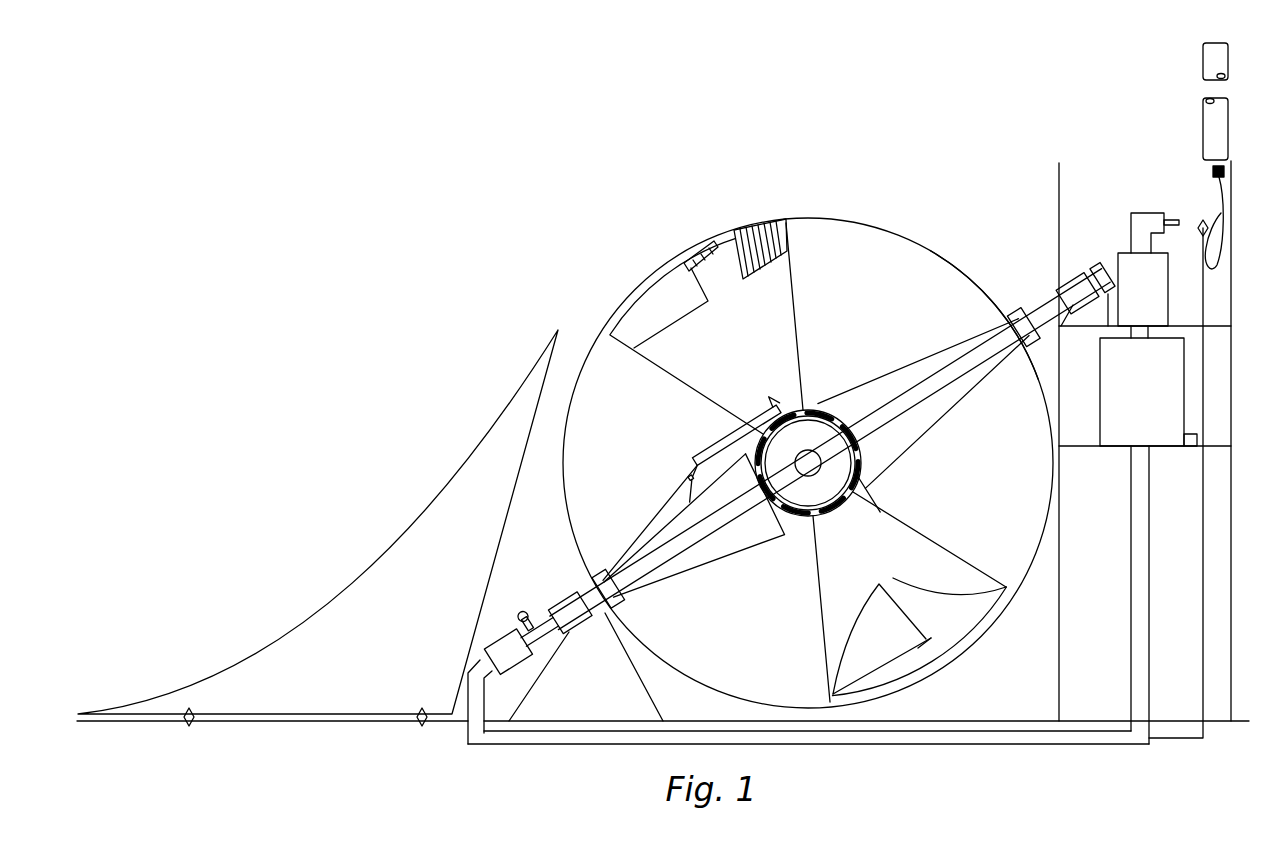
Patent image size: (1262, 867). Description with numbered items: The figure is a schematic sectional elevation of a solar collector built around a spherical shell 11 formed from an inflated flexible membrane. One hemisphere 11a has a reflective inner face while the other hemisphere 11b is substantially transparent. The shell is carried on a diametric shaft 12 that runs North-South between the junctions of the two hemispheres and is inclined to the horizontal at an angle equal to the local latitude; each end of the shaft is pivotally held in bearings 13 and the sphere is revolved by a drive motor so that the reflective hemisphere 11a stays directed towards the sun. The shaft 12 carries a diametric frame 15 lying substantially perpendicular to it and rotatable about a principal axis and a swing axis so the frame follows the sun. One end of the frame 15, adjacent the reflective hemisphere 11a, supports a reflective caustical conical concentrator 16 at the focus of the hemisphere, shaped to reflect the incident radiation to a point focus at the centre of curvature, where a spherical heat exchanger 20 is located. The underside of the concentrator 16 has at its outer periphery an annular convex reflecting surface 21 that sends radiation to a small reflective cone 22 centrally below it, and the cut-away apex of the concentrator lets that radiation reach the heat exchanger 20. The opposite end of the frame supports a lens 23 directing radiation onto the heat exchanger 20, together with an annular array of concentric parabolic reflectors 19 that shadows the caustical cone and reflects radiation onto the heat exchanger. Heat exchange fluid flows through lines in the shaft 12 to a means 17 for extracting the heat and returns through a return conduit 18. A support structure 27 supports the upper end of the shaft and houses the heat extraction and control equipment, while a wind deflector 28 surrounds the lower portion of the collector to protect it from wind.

The spherical shell 11 is at (877, 219).
The reflective hemisphere 11a is at (1004, 623).
The transparent hemisphere 11b is at (957, 257).
The diametric shaft 12 is at (816, 457).
The bearings 13 is at (823, 453).
The diametric frame 15 is at (795, 325).
The caustical conical concentrator 16 is at (879, 639).
The means for extracting heat 17 is at (1148, 329).
The return conduit 18 is at (989, 743).
The annular array of concentric parabolic reflectors 19 is at (761, 230).
The spherical heat exchanger 20 is at (808, 463).
The annular convex reflecting surface 21 is at (983, 589).
The small reflective cone 22 is at (918, 643).
The lens 23 is at (702, 260).
The support structure 27 is at (1057, 177).
The wind deflector 28 is at (318, 528).